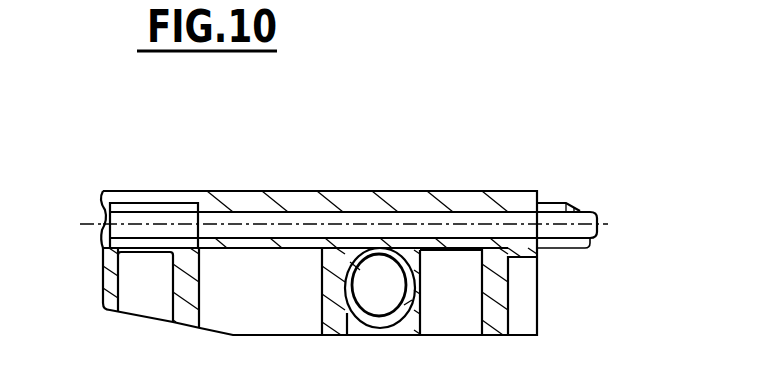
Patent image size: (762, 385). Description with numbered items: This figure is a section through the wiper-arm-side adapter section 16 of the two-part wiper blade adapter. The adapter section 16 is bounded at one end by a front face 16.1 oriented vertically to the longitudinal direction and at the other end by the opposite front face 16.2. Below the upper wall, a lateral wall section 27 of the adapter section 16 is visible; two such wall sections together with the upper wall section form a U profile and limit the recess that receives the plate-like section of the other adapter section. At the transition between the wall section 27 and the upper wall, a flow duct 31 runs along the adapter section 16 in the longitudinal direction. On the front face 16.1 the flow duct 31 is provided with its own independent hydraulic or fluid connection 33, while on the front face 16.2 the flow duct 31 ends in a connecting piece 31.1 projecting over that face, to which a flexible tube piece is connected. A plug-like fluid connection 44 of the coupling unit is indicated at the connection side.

The adapter section 16 is at (352, 163).
The front face 16.1 is at (102, 283).
The front face 16.2 is at (540, 295).
The wall section 27 is at (260, 315).
The flow duct 31 is at (355, 181).
The connecting piece 31.1 is at (616, 132).
The fluid connection 33 is at (189, 181).
The fluid connection 44 is at (55, 169).